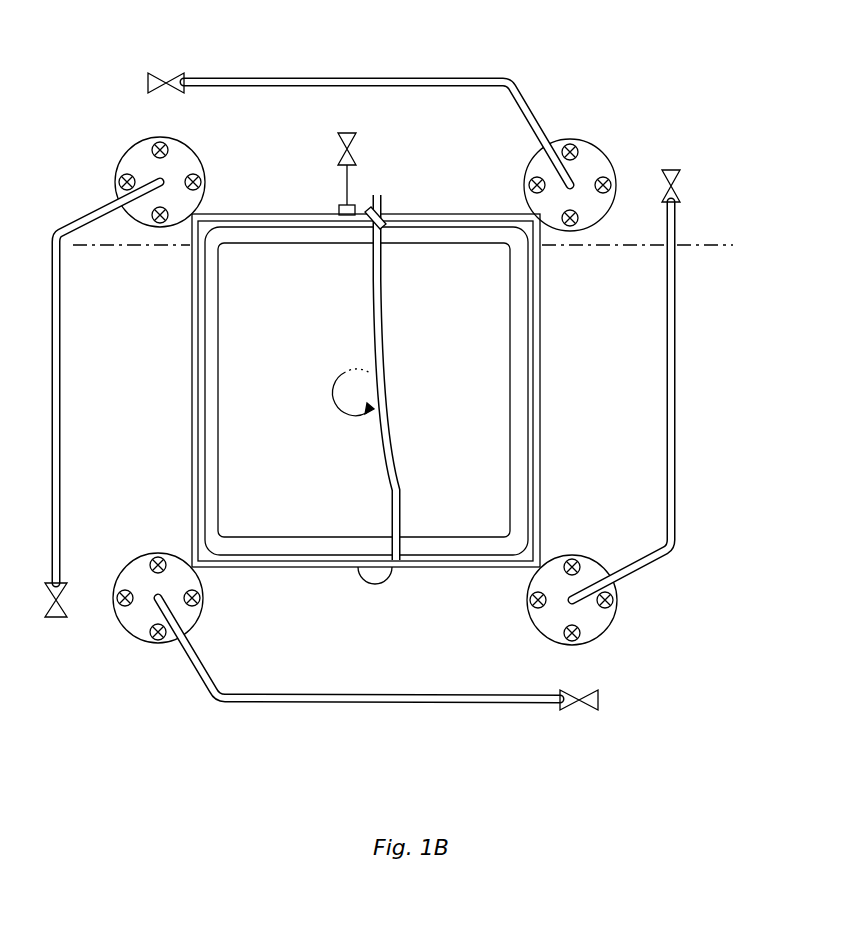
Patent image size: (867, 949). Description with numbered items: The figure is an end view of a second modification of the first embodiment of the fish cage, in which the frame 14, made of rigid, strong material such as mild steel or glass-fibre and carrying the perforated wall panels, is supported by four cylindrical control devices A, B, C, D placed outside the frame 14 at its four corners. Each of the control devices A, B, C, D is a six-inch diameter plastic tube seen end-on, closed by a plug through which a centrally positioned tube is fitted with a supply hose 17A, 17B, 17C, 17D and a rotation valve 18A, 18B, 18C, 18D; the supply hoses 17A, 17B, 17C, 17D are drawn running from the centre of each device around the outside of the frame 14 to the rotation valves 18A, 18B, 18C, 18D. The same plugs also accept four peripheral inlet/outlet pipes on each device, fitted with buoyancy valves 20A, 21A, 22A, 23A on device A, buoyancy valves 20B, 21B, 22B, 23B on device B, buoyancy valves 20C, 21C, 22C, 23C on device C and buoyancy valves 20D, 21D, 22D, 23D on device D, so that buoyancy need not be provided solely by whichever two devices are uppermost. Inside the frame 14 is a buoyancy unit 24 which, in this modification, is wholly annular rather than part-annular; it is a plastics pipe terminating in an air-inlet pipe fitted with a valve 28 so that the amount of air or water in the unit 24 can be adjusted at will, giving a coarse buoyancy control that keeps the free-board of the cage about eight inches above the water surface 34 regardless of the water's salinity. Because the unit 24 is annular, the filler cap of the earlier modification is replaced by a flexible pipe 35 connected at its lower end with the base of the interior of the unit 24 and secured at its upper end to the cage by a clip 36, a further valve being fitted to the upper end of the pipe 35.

The frame 14 is at (538, 370).
The buoyancy unit 24 is at (518, 437).
The valve 28 is at (340, 135).
The water surface 34 is at (720, 245).
The flexible pipe 35 is at (382, 340).
The clip 36 is at (384, 216).
The cylindrical member A is at (183, 141).
The cylindrical member B is at (524, 198).
The cylindrical member C is at (532, 633).
The cylindrical member D is at (208, 618).
The supply hose 17A is at (58, 437).
The supply hose 17B is at (386, 76).
The supply hose 17C is at (667, 327).
The supply hose 17D is at (428, 708).
The rotation valve 18A is at (65, 590).
The rotation valve 18B is at (153, 70).
The rotation valve 18C is at (680, 178).
The rotation valve 18D is at (582, 712).
The buoyancy valve 20A is at (155, 224).
The buoyancy valve 20B is at (530, 183).
The buoyancy valve 20C is at (576, 558).
The buoyancy valve 20D is at (200, 597).
The buoyancy valve 21A is at (118, 182).
The buoyancy valve 21B is at (573, 145).
The buoyancy valve 21C is at (613, 600).
The buoyancy valve 21D is at (157, 640).
The buoyancy valve 22A is at (150, 142).
The buoyancy valve 22B is at (610, 180).
The buoyancy valve 22C is at (580, 633).
The buoyancy valve 22D is at (120, 605).
The buoyancy valve 23A is at (202, 182).
The buoyancy valve 23B is at (582, 220).
The buoyancy valve 23C is at (530, 600).
The buoyancy valve 23D is at (158, 557).